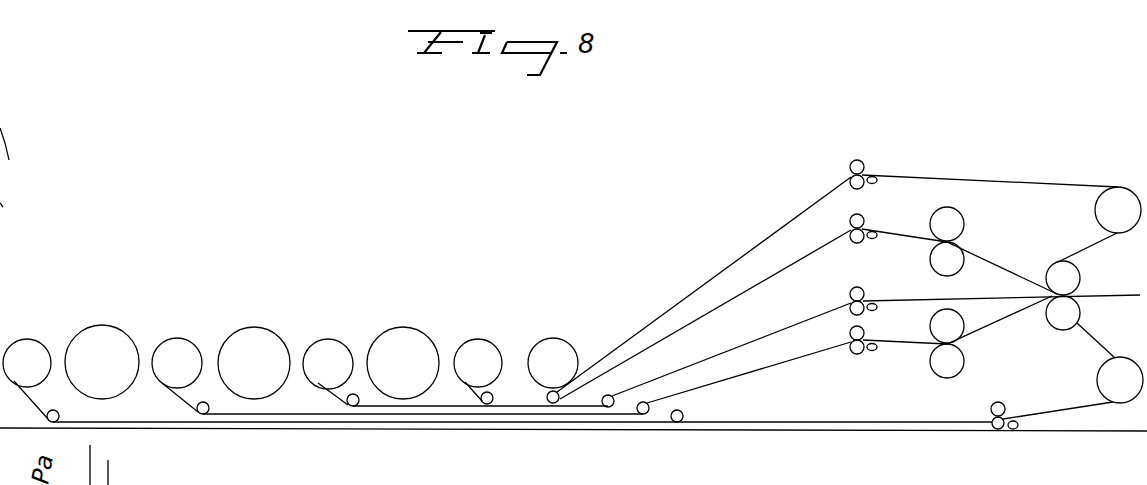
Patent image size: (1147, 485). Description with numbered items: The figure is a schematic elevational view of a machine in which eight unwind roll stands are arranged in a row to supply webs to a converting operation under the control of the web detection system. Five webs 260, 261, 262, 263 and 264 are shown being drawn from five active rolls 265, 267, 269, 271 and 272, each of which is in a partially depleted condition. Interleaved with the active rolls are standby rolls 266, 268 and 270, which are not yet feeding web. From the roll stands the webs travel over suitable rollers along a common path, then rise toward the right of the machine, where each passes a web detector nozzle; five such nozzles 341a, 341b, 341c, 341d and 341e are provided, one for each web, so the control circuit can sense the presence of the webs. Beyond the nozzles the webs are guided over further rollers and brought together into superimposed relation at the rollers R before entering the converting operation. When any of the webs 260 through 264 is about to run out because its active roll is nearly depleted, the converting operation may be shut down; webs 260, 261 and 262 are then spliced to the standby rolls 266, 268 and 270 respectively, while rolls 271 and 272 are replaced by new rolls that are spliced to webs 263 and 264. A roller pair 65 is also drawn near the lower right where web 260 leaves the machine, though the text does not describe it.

The active roll 265 is at (41, 353).
The roll 266 is at (122, 353).
The active roll 267 is at (190, 353).
The roll 268 is at (272, 352).
The active roll 269 is at (338, 357).
The roll 270 is at (418, 350).
The active roll 271 is at (495, 358).
The active roll 272 is at (563, 358).
The web 264 is at (1048, 185).
The web 263 is at (1002, 263).
The web 262 is at (897, 300).
The web 261 is at (1022, 310).
The web 260 is at (1083, 406).
The rollers R is at (1076, 279).
The roller pair 65 is at (1001, 402).
The web detector nozzle 341a is at (1015, 429).
The web detector nozzle 341b is at (872, 351).
The web detector nozzle 341c is at (872, 311).
The web detector nozzle 341d is at (873, 239).
The web detector nozzle 341e is at (872, 184).